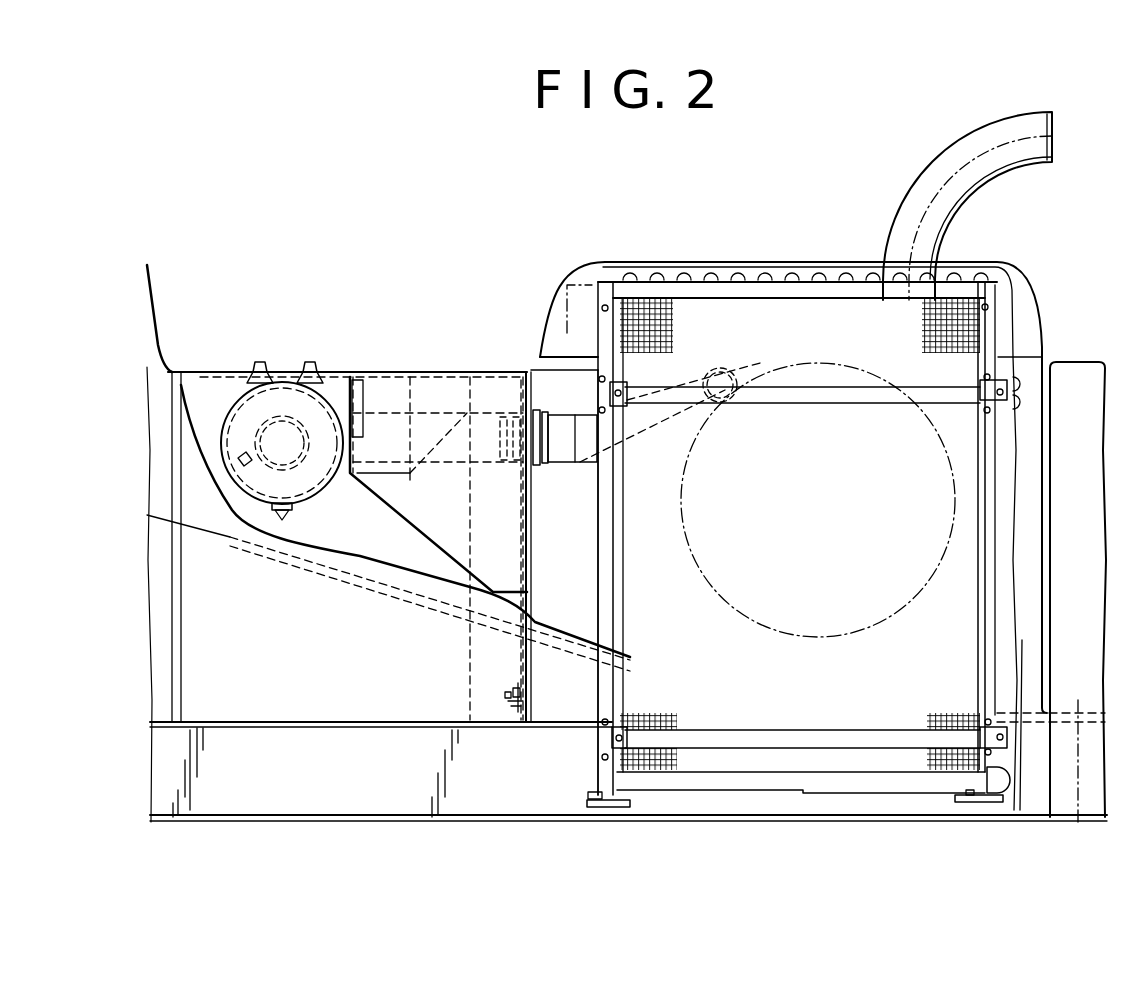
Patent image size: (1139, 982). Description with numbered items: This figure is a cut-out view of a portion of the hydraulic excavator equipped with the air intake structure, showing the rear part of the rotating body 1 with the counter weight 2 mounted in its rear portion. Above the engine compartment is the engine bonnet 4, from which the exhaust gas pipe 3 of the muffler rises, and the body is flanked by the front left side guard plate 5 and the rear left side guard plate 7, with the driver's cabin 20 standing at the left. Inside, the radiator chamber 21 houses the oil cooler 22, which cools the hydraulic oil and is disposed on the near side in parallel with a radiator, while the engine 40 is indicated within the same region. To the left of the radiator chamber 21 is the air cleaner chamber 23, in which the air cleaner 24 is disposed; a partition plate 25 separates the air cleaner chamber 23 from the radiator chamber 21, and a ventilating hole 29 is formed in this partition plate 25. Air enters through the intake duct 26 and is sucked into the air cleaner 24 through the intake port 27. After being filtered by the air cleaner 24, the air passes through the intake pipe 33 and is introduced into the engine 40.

The rotating body 1 is at (647, 248).
The counter weight 2 is at (1088, 362).
The exhaust gas pipe 3 is at (1055, 142).
The engine bonnet 4 is at (740, 262).
The front left side guard plate 5 is at (246, 708).
The rear left side guard plate 7 is at (1028, 675).
The driver's cabin 20 is at (153, 298).
The radiator chamber 21 is at (585, 598).
The oil cooler 22 is at (707, 722).
The air cleaner chamber 23 is at (328, 523).
The air cleaner 24 is at (232, 400).
The partition plate 25 is at (575, 598).
The intake duct 26 is at (410, 532).
The intake port 27 is at (369, 393).
The ventilating hole 29 is at (534, 528).
The intake pipe 33 is at (545, 412).
The engine 40 is at (810, 365).